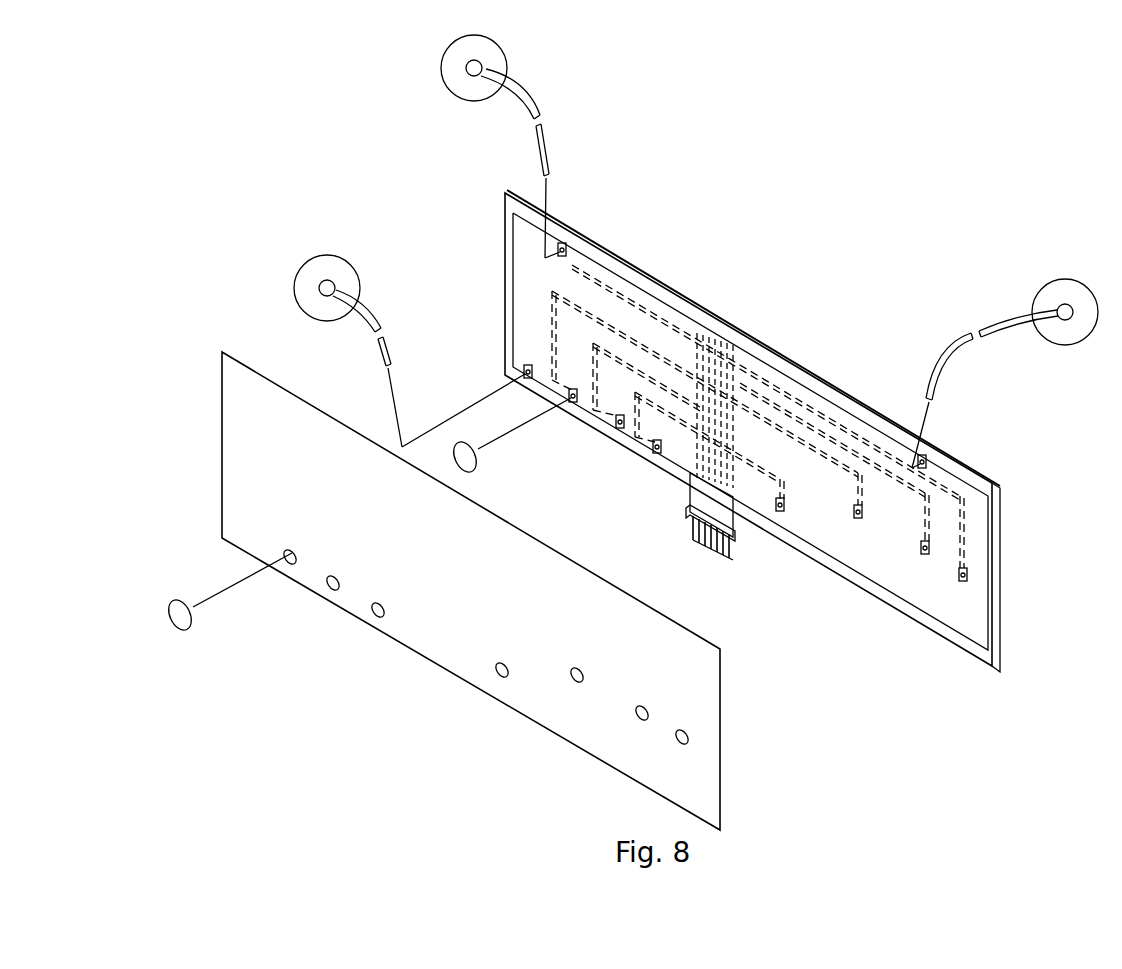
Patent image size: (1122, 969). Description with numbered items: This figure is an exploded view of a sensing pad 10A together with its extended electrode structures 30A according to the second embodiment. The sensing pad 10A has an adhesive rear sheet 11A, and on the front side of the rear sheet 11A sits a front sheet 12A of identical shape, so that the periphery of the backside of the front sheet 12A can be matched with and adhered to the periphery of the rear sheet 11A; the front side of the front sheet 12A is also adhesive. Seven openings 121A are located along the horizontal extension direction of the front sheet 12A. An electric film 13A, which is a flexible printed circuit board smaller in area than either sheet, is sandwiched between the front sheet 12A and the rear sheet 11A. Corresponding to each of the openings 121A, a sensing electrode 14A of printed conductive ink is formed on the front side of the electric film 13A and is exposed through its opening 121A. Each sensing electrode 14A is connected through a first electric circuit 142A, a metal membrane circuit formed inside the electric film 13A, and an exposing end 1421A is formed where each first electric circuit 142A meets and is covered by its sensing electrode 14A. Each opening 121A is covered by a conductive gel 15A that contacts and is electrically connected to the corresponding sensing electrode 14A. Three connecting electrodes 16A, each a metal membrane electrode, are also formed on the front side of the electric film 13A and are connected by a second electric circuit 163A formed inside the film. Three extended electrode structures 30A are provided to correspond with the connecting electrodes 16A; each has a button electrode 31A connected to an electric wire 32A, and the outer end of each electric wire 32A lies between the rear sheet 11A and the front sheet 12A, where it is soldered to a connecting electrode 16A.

The sensing pad 10A is at (905, 768).
The rear sheet 11A is at (996, 488).
The front sheet 12A is at (226, 420).
The openings 121A is at (505, 672).
The electric film 13A is at (978, 598).
The sensing electrode 14A is at (472, 463).
The first electric circuit 142A is at (654, 373).
The exposing end 1421A is at (572, 403).
The conductive gel 15A is at (190, 624).
The connecting electrode 16A is at (566, 250).
The second electric circuit 163A is at (672, 308).
The extended electrode structure 30A is at (592, 118).
The button electrode 31A is at (488, 57).
The electric wire 32A is at (550, 176).